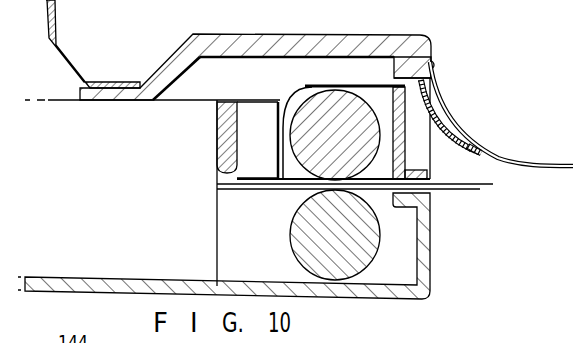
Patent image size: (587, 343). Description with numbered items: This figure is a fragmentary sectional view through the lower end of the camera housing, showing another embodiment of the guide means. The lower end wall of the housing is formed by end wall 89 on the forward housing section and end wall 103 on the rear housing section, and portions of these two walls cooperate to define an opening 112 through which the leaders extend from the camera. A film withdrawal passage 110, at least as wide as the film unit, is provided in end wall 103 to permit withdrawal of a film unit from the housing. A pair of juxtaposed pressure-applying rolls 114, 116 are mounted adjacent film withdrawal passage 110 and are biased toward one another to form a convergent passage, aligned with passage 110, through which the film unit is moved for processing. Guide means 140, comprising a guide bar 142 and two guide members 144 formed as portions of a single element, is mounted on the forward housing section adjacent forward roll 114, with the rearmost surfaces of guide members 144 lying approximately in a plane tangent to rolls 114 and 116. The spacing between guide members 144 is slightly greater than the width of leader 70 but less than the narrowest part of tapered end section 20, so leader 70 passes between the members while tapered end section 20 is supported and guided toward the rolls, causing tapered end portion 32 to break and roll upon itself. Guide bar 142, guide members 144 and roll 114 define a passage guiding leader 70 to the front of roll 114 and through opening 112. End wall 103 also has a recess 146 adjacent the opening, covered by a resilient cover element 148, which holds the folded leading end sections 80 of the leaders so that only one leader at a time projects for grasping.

The tapered end section 20 is at (496, 187).
The tapered end portion 32 is at (272, 188).
The leader 70 is at (363, 82).
The leading end section 80 is at (515, 163).
The end wall 89 is at (413, 63).
The end wall 103 is at (423, 227).
The film withdrawal passage 110 is at (420, 190).
The opening 112 is at (417, 87).
The pressure-applying roll 114 is at (372, 125).
The pressure-applying roll 116 is at (362, 257).
The guide means 140 is at (225, 93).
The guide bar 142 is at (240, 114).
The guide members 144 is at (268, 110).
The recess 146 is at (425, 100).
The resilient cover element 148 is at (472, 144).